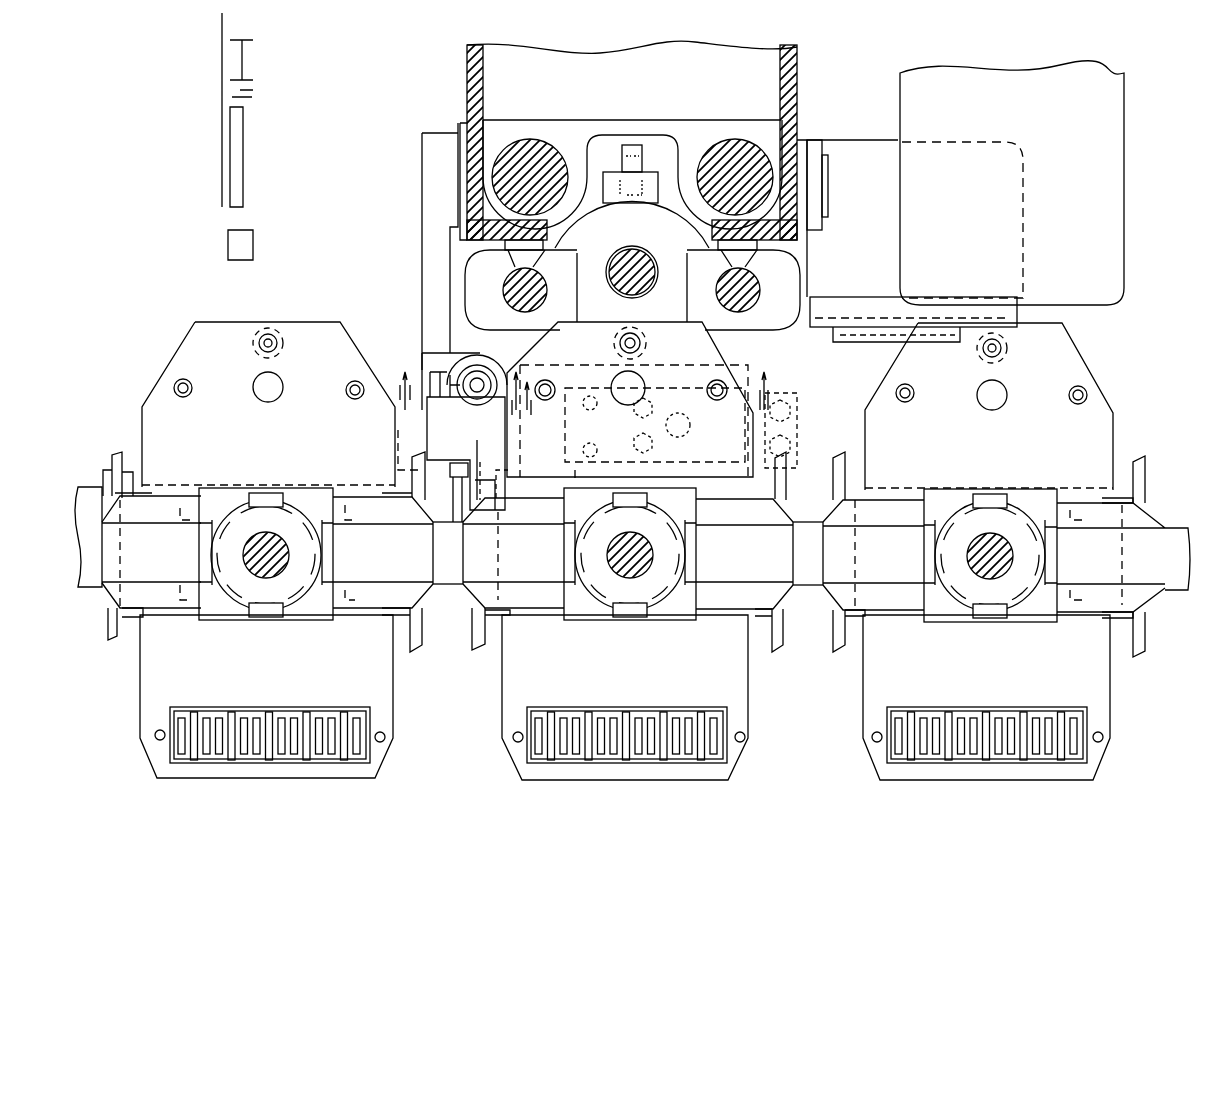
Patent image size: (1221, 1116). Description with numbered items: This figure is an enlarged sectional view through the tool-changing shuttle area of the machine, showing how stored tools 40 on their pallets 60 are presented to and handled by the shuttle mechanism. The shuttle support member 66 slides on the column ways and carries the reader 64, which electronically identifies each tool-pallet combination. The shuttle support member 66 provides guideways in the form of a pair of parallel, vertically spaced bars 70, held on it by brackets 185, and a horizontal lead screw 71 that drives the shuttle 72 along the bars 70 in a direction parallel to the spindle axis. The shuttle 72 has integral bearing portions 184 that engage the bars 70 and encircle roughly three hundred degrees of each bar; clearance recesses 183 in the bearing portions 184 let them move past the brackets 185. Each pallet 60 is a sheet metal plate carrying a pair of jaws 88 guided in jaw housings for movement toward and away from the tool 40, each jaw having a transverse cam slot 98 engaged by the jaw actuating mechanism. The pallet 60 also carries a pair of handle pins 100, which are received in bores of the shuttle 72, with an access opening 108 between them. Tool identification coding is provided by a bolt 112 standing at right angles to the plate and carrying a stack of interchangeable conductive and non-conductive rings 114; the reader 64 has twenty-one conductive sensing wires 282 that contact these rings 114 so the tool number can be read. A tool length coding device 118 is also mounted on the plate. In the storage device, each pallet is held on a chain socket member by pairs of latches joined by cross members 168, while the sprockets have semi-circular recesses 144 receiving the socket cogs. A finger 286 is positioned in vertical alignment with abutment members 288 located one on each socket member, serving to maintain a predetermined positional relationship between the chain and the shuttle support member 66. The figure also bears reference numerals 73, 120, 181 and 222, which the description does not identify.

The tool 40 is at (290, 585).
The pallet 60 is at (618, 551).
The reader 64 is at (984, 183).
The shuttle support member 66 is at (800, 88).
The bars 70 is at (545, 290).
The horizontal lead screw 71 is at (640, 258).
The shuttle 72 is at (580, 262).
The guide block 73 is at (640, 262).
The jaws 88 is at (208, 540).
The cam slot 98 is at (375, 545).
The pins 100 is at (178, 380).
The access opening 108 is at (272, 398).
The bolt 112 is at (272, 340).
The interchangeable rings 114 is at (718, 160).
The tool length coding device 118 is at (282, 758).
The fin 120 is at (445, 600).
The semi-circular recesses 144 is at (810, 592).
The cross members 168 is at (820, 612).
The arm 181 is at (478, 252).
The clearance recesses 183 is at (470, 228).
The bearing portions 184 is at (468, 292).
The brackets 185 is at (440, 180).
The bearing assembly 222 is at (425, 420).
The sensing wires 282 is at (806, 434).
The finger 286 is at (455, 492).
The abutment members 288 is at (900, 405).